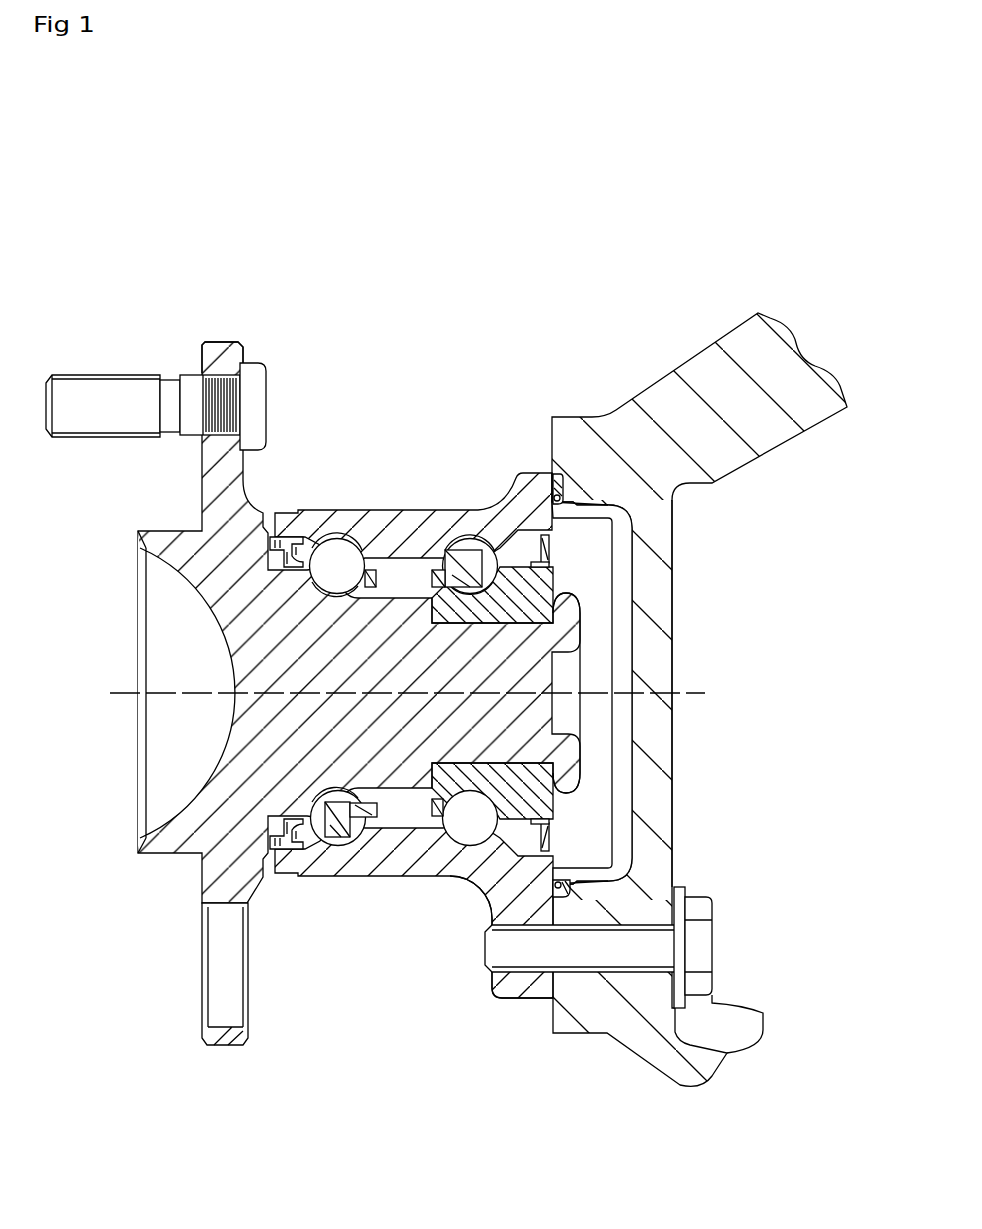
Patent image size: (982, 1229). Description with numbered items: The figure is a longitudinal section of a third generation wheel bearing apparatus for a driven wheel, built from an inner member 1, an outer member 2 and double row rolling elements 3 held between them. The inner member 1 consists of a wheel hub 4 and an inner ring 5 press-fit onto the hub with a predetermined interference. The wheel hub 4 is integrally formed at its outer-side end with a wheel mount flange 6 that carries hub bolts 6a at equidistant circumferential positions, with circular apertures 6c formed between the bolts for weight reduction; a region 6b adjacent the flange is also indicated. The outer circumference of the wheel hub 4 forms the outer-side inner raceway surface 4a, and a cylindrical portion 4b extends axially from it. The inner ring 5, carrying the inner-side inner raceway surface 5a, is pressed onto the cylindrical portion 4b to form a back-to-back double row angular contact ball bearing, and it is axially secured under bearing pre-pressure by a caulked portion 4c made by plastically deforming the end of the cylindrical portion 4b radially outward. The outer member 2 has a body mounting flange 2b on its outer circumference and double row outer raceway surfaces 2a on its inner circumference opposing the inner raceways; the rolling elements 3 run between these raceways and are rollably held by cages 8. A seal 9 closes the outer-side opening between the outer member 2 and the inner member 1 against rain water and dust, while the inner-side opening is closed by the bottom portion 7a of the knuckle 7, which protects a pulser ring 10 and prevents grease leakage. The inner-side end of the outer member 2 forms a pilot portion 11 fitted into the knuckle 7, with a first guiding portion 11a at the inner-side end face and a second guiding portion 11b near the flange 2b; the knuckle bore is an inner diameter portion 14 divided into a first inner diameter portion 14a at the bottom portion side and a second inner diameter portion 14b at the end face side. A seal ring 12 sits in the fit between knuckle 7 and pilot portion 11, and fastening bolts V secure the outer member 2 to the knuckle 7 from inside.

The inner member 1 is at (184, 660).
The outer member 2 is at (407, 514).
The outer raceway surface 2a is at (339, 562).
The body mounting flange 2b is at (527, 990).
The rolling elements 3 is at (457, 850).
The wheel hub 4 is at (207, 597).
The inner raceway surface 4a is at (334, 578).
The cylindrical portion 4b is at (497, 770).
The caulked portion 4c is at (577, 603).
The inner ring 5 is at (516, 615).
The inner raceway surface 5a is at (478, 578).
The wheel mount flange 6 is at (220, 344).
The hub bolt 6a is at (113, 392).
The seal land portion 6b is at (268, 537).
The circular aperture 6c is at (237, 915).
The knuckle 7 is at (668, 393).
The bottom portion 7a is at (650, 668).
The cage 8 is at (432, 797).
The seal 9 is at (272, 843).
The pulser ring 10 is at (547, 547).
The pilot portion 11 is at (674, 519).
The first guiding portion 11a is at (583, 518).
The second guiding portion 11b is at (573, 497).
The seal ring 12 is at (552, 476).
The inner diameter portion 14 is at (691, 866).
The first inner diameter portion 14a is at (603, 862).
The second inner diameter portion 14b is at (568, 862).
The fastening bolt V is at (712, 946).